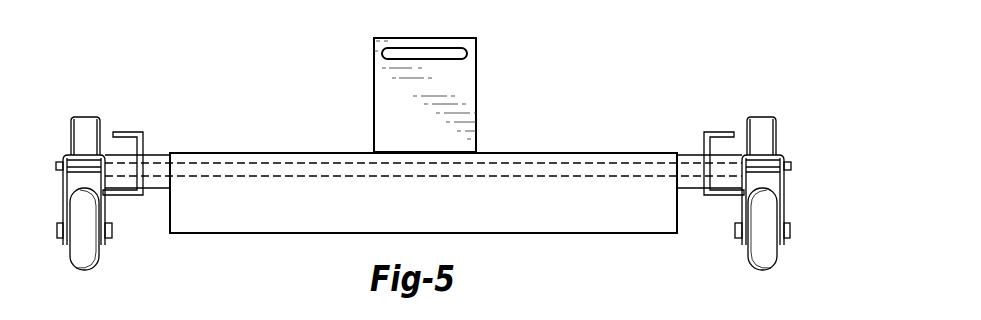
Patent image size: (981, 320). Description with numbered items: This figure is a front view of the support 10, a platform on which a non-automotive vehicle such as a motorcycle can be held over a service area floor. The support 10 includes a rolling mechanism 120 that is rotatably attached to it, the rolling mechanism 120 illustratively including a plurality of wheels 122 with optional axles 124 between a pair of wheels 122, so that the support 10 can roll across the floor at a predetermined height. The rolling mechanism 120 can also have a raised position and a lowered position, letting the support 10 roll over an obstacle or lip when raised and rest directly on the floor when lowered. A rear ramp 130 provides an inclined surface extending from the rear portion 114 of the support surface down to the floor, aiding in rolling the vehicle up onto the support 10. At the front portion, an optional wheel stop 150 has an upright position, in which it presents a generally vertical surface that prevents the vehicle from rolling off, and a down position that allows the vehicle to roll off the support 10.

The support 10 is at (580, 74).
The rear portion 114 is at (609, 153).
The rolling mechanism 120 is at (57, 158).
The wheels 122 is at (86, 270).
The axles 124 is at (324, 314).
The rear ramp 130 is at (636, 218).
The wheel stop 150 is at (372, 40).